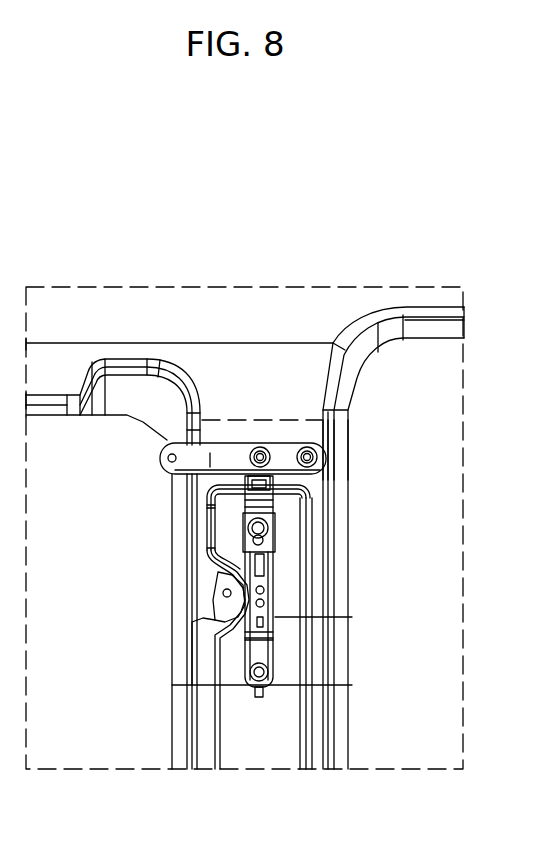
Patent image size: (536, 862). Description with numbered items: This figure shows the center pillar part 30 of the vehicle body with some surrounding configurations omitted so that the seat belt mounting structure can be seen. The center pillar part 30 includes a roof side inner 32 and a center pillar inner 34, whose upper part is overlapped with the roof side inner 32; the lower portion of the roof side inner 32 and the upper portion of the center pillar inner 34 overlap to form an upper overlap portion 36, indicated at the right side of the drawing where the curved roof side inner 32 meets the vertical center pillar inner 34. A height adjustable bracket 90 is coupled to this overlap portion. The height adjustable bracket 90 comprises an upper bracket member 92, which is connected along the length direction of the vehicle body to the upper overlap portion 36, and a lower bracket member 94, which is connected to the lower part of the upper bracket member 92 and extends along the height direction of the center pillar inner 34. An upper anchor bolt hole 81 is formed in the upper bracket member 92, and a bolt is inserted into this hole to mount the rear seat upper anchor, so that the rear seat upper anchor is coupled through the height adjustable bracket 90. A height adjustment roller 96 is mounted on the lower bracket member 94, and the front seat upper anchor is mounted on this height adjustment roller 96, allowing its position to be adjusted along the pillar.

The center pillar part 30 is at (262, 270).
The roof side inner 32 is at (302, 395).
The center pillar inner 34 is at (348, 725).
The upper overlap portion 36 is at (356, 420).
The upper anchor bolt hole 81 is at (168, 458).
The height adjustable bracket 90 is at (118, 503).
The upper bracket member 92 is at (210, 474).
The lower bracket member 94 is at (255, 600).
The height adjustment roller 96 is at (252, 543).